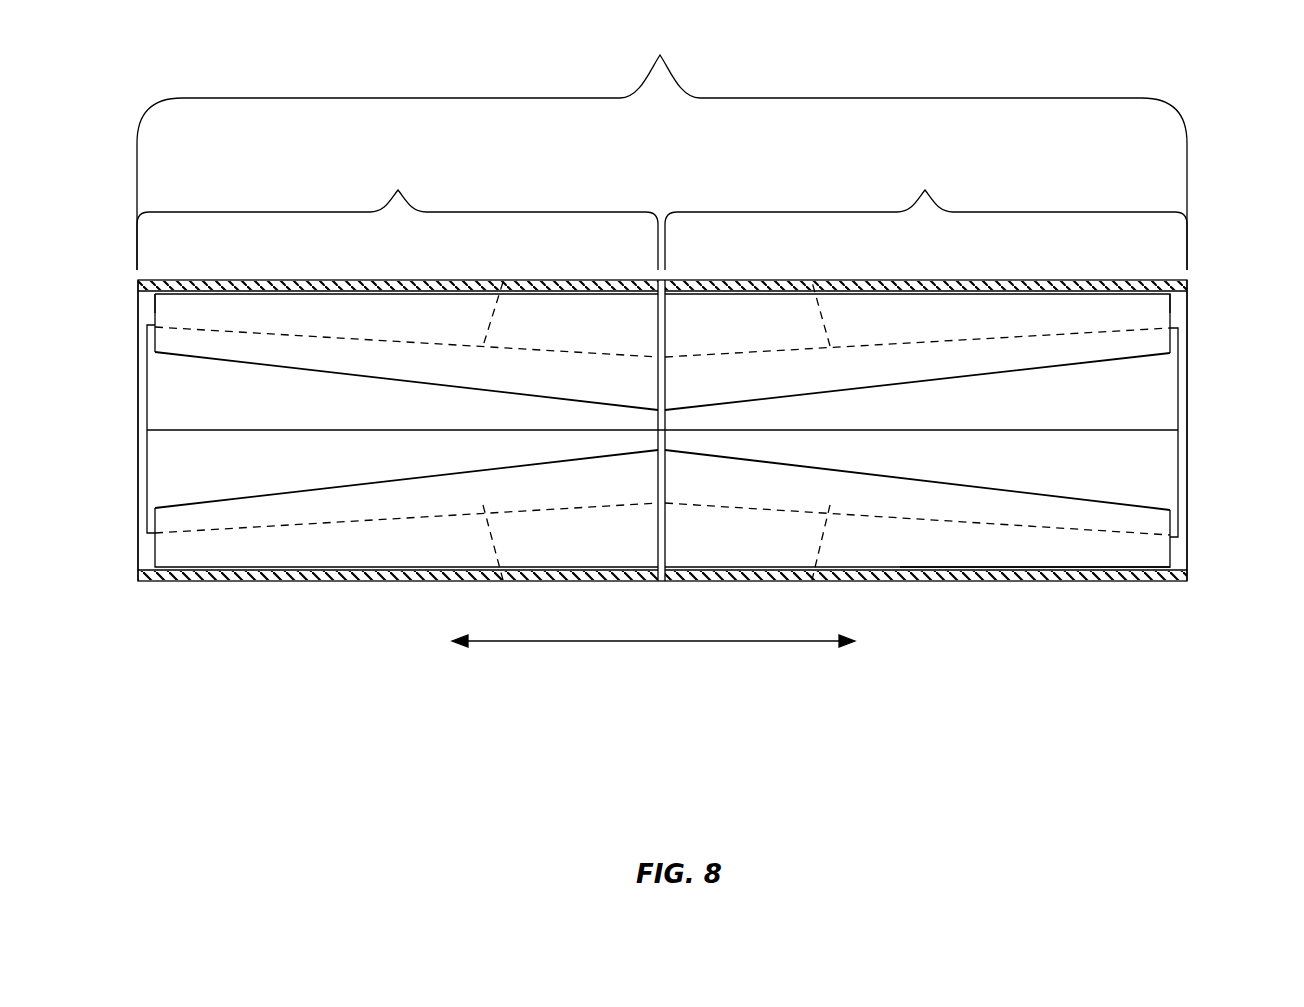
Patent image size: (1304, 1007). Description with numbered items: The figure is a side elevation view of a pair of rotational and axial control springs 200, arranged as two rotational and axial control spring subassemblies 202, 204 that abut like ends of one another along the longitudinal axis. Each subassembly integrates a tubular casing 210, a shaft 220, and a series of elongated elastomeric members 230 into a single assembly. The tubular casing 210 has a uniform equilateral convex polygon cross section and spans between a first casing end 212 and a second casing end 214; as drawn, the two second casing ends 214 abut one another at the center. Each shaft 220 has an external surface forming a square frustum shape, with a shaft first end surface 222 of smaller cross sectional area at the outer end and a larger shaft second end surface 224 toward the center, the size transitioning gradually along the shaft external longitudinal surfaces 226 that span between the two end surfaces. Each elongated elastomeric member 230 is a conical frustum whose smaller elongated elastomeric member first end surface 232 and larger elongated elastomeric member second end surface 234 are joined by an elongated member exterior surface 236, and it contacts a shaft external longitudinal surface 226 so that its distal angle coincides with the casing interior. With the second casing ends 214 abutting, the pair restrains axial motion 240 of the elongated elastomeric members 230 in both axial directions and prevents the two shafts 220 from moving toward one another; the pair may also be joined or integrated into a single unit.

The rotational and axial control spring 200 is at (662, 145).
The rotational and axial control spring subassembly 202 is at (397, 215).
The rotational and axial control spring subassembly 204 is at (926, 215).
The tubular casing 210 is at (385, 582).
The first casing end 212 is at (137, 460).
The second casing end 214 is at (678, 283).
The shaft 220 is at (188, 442).
The shaft first end surface 222 is at (140, 503).
The shaft second end surface 224 is at (658, 443).
The shaft external longitudinal surface 226 is at (503, 282).
The elongated elastomeric member 230 is at (287, 318).
The elongated elastomeric member first end surface 232 is at (153, 312).
The elongated elastomeric member second end surface 234 is at (658, 313).
The elongated member exterior surface 236 is at (978, 548).
The axial motion 240 is at (655, 643).